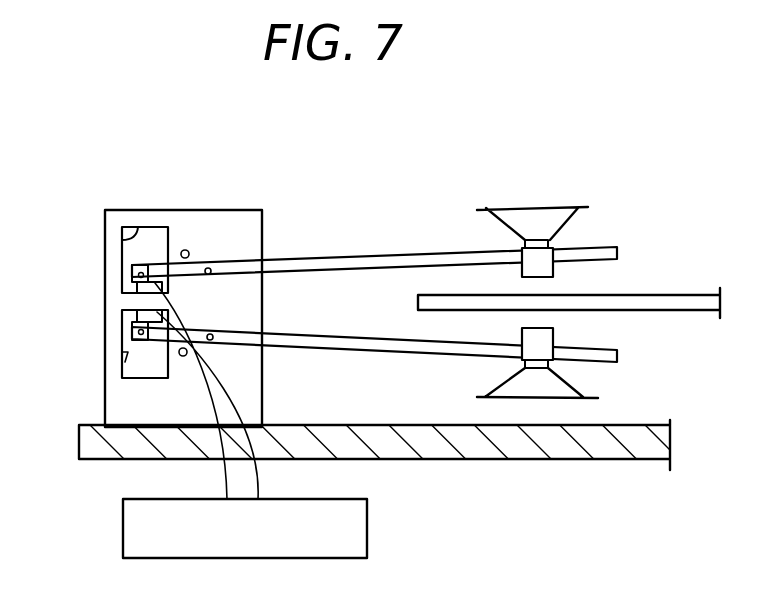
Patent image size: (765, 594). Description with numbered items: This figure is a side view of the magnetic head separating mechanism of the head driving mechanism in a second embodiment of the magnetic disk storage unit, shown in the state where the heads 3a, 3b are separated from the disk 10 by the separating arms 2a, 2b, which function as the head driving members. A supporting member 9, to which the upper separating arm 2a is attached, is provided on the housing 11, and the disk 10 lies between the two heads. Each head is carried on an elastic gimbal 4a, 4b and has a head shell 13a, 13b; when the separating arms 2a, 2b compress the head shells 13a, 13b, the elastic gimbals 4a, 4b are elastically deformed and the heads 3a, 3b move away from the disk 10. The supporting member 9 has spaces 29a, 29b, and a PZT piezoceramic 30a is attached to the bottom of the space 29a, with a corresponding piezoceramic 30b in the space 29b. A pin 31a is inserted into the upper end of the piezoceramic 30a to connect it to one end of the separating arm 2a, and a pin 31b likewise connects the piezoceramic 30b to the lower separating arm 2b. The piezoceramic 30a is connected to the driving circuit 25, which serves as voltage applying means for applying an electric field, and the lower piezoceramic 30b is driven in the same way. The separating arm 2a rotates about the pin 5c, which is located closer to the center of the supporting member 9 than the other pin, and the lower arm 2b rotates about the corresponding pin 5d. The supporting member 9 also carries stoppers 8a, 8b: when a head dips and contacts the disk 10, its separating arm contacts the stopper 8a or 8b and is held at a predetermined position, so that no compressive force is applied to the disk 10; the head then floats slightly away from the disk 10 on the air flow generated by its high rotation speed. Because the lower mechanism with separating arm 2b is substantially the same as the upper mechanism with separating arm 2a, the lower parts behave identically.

The separating arm 2a is at (400, 257).
The separating arm 2b is at (402, 351).
The head 3a is at (555, 272).
The head 3b is at (550, 343).
The elastic gimbal 4a is at (537, 211).
The elastic gimbal 4b is at (565, 398).
The pin 5c is at (208, 267).
The pin 5d is at (213, 340).
The stopper 8a is at (185, 250).
The stopper 8b is at (183, 356).
The supporting member 9 is at (262, 222).
The disk 10 is at (692, 293).
The housing 11 is at (620, 458).
The head shell 13a is at (550, 245).
The head shell 13b is at (553, 364).
The driving circuit 25 is at (368, 530).
The space 29a is at (125, 240).
The space 29b is at (126, 357).
The piezoceramic 30a is at (135, 291).
The piezoceramic 30b is at (137, 318).
The pin 31a is at (134, 268).
The pin 31b is at (137, 334).